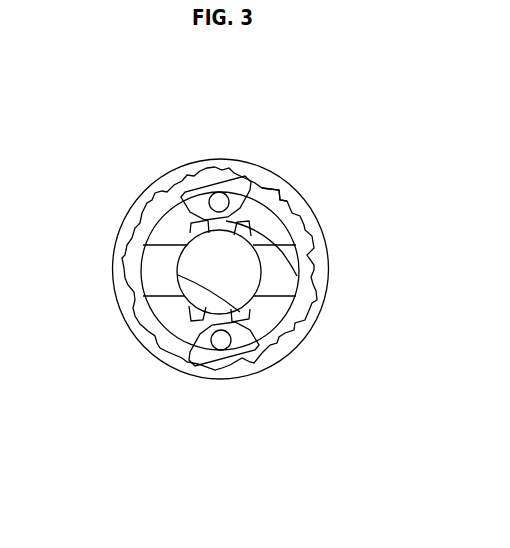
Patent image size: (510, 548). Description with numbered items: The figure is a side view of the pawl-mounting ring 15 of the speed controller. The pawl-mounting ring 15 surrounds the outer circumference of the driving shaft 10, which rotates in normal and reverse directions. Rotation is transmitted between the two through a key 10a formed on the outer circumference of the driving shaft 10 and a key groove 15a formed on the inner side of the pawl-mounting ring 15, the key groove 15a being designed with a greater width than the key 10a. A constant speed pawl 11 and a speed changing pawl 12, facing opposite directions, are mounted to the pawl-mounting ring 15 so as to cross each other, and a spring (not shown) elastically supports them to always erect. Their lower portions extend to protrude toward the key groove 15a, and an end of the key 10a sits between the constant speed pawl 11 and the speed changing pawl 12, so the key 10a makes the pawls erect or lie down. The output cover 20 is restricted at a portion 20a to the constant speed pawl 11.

The driving shaft 10 is at (247, 272).
The key 10a is at (243, 220).
The constant speed pawl 11 is at (247, 172).
The speed changing pawl 12 is at (159, 235).
The pawl-mounting ring 15 is at (151, 237).
The key groove 15a is at (178, 275).
The output cover 20 is at (200, 168).
The portion 20a is at (281, 187).